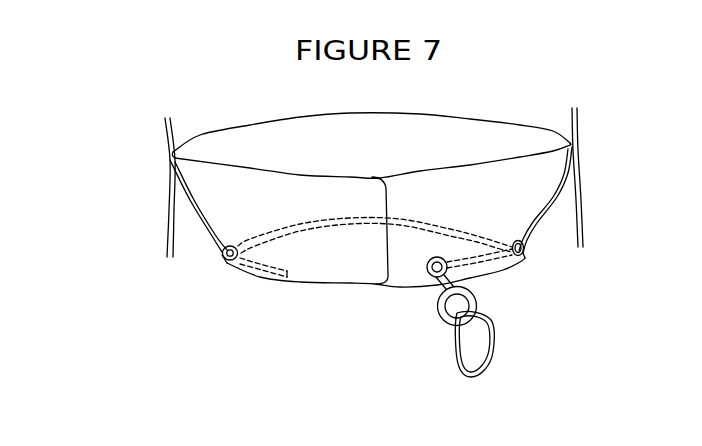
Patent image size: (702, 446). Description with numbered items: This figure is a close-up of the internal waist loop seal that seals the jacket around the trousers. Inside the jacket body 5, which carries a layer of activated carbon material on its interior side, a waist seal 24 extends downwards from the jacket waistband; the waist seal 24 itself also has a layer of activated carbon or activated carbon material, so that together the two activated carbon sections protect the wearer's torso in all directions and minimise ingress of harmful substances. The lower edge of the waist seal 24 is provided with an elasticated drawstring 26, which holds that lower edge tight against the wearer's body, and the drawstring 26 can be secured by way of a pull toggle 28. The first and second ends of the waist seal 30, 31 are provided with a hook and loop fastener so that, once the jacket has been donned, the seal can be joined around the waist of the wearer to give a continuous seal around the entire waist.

The jacket body 5 is at (147, 165).
The waist seal 24 is at (522, 121).
The elasticated drawstring 26 is at (493, 345).
The pull toggle 28 is at (441, 310).
The first end of the waist seal 30 is at (307, 283).
The second end of the waist seal 31 is at (393, 285).